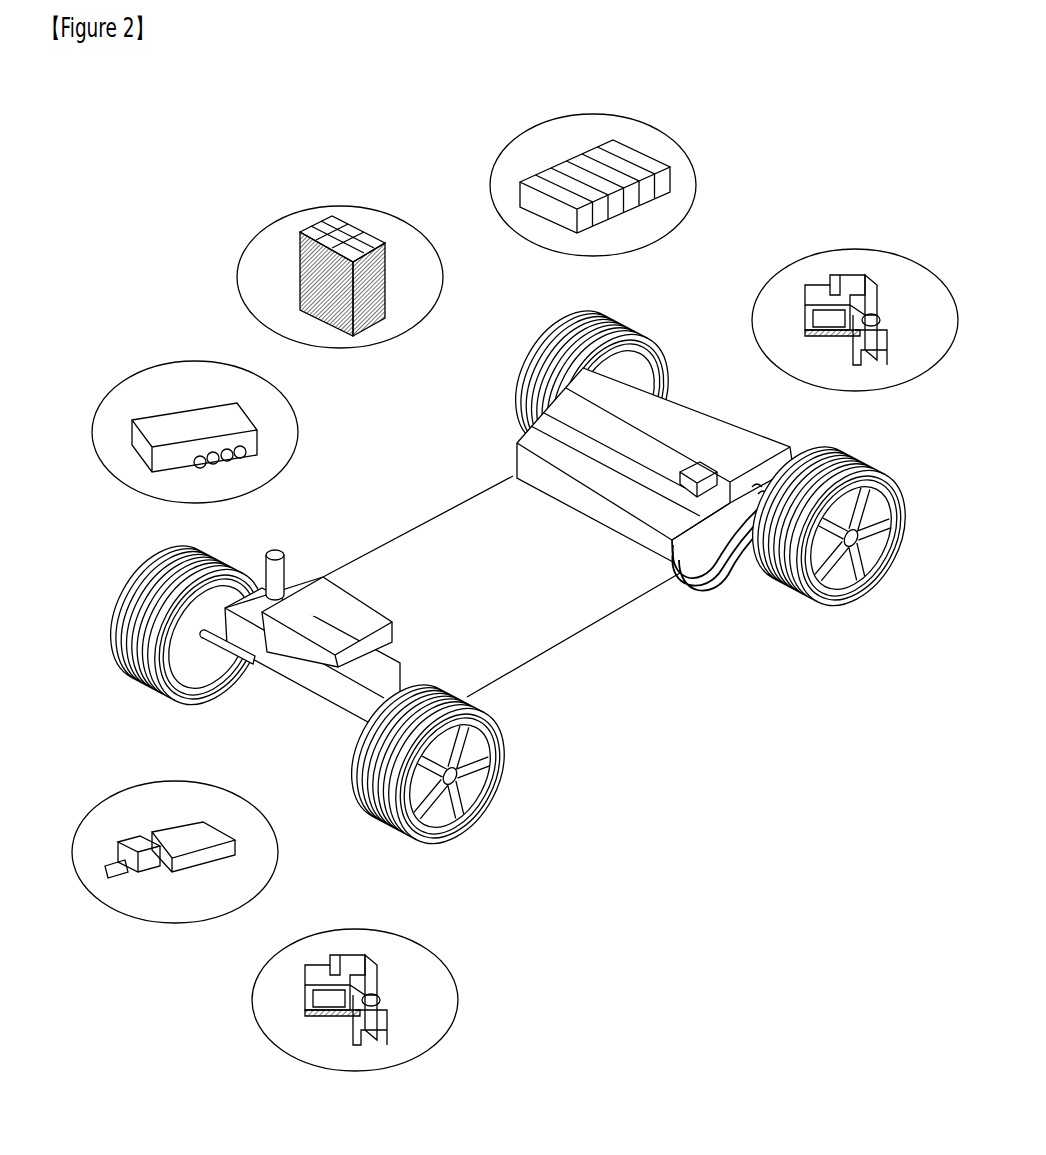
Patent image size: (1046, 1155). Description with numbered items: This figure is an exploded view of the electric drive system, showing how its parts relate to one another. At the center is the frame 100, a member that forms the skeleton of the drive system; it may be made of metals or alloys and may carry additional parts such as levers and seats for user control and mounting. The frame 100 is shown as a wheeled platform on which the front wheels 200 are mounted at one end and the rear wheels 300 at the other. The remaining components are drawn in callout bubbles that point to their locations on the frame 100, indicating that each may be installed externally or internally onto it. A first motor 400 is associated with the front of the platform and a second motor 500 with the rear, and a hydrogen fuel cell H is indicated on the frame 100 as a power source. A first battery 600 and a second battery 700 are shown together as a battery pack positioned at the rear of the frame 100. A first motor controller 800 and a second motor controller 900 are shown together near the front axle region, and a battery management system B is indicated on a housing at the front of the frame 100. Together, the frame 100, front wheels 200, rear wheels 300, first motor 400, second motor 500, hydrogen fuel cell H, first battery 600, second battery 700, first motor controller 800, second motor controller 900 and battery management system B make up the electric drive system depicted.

The frame 100 is at (547, 617).
The front wheels 200 is at (472, 842).
The rear wheels 300 is at (826, 606).
The first motor 400 is at (323, 931).
The second motor 500 is at (795, 390).
The first battery 600 is at (585, 265).
The second battery 700 is at (633, 254).
The first motor controller 800 is at (175, 803).
The second motor controller 900 is at (226, 790).
The hydrogen fuel cell H is at (418, 322).
The battery management system B is at (268, 487).